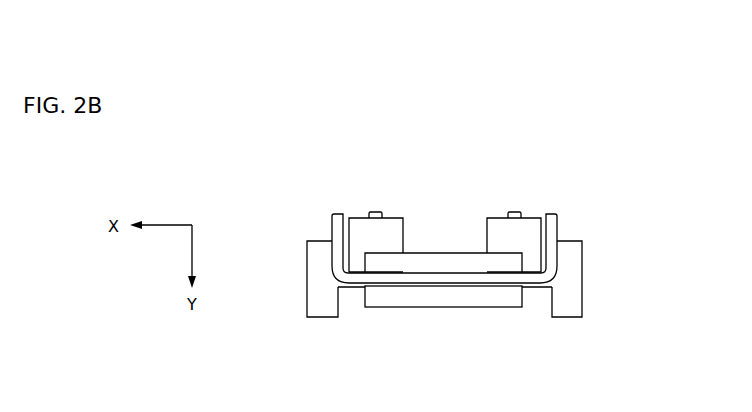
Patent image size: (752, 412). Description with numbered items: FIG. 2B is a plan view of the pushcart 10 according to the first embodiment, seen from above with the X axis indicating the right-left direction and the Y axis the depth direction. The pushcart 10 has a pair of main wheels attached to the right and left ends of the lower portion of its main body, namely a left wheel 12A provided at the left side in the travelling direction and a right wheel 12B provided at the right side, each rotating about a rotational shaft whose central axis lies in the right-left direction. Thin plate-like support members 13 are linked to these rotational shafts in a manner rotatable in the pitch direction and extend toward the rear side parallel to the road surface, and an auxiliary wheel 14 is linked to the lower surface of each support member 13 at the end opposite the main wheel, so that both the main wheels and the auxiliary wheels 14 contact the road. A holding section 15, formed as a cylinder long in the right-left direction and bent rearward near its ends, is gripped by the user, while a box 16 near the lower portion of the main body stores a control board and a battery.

The pushcart 10 is at (591, 157).
The left wheel 12A is at (305, 279).
The right wheel 12B is at (583, 280).
The support member 13 is at (394, 218).
The auxiliary wheel 14 is at (375, 212).
The holding section 15 is at (557, 216).
The box 16 is at (423, 307).